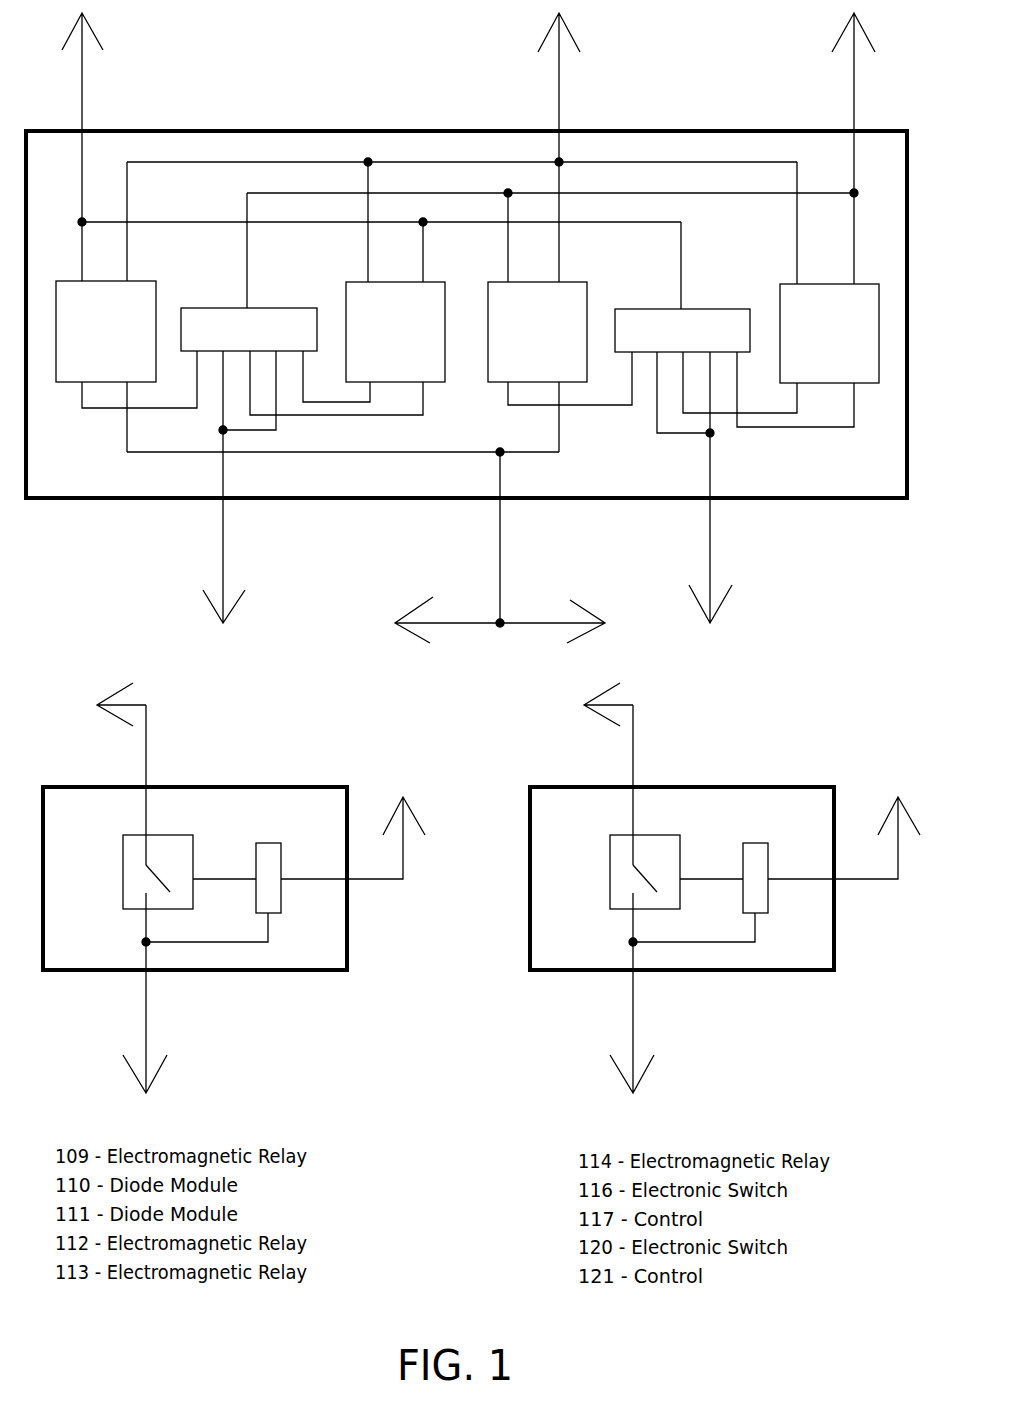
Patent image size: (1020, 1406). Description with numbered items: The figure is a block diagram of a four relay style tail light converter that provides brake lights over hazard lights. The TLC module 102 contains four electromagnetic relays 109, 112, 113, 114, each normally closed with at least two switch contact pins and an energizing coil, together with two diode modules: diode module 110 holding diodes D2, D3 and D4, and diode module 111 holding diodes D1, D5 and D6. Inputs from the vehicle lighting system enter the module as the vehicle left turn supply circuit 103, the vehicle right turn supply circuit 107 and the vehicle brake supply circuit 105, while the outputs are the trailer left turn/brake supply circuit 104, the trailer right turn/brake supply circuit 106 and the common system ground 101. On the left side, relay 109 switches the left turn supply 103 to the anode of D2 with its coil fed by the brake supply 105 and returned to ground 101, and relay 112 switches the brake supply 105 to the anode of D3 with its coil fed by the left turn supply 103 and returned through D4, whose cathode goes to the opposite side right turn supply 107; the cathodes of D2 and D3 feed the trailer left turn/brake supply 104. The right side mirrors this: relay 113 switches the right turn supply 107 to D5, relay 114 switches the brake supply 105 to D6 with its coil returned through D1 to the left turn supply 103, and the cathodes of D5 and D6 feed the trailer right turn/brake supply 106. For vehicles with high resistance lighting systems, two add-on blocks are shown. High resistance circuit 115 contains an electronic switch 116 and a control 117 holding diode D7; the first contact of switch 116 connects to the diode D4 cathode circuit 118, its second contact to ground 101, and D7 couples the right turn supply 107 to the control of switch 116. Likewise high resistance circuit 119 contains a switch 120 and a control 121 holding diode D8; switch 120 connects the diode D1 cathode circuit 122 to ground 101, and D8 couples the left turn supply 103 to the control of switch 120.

The common system ground 101 is at (500, 579).
The TLC module 102 is at (297, 130).
The vehicle left turn supply circuit 103 is at (83, 107).
The trailer left turn/brake supply circuit 104 is at (223, 562).
The vehicle brake supply circuit 105 is at (559, 106).
The trailer right turn/brake supply circuit 106 is at (711, 558).
The vehicle right turn supply circuit 107 is at (854, 97).
The electromagnetic relay 109 is at (156, 308).
The diode module 110 is at (274, 307).
The diode module 111 is at (700, 309).
The electromagnetic relay 112 is at (445, 308).
The electromagnetic relay 113 is at (587, 310).
The electromagnetic relay 114 is at (780, 284).
The high resistance circuit 115 is at (276, 787).
The electronic switch 116 is at (123, 906).
The control 117 is at (272, 843).
The diode D4 cathode circuit 118 is at (146, 757).
The high resistance circuit 119 is at (763, 787).
The switch 120 is at (610, 906).
The control 121 is at (759, 843).
The diode D1 cathode circuit 122 is at (633, 757).